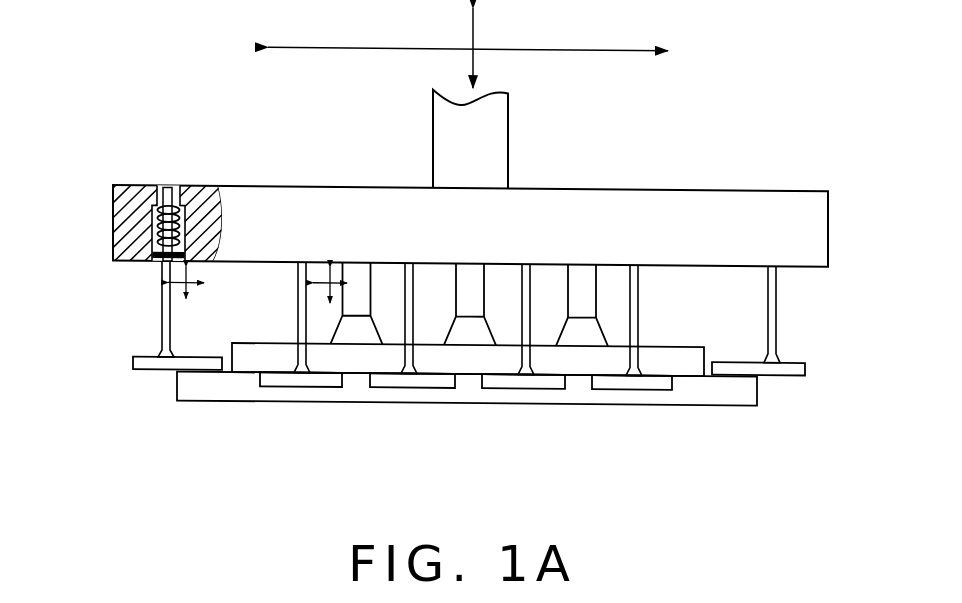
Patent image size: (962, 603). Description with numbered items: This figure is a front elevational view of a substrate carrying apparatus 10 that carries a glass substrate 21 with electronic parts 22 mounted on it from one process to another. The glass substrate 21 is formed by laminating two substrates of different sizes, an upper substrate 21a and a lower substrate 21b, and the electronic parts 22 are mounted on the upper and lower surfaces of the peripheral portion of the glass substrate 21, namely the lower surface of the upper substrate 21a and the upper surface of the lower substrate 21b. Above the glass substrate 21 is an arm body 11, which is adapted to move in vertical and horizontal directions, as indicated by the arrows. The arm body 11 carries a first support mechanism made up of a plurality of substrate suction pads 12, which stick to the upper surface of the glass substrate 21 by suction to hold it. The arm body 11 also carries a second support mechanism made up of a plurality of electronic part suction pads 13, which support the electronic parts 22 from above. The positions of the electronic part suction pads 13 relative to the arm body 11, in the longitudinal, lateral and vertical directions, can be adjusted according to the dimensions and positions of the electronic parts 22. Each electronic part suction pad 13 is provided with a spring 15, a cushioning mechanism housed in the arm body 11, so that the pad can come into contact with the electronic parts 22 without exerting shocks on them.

The substrate carrying apparatus 10 is at (680, 151).
The arm body 11 is at (594, 200).
The substrate suction pad 12 is at (370, 292).
The electronic part suction pad 13 is at (158, 302).
The spring 15 is at (150, 224).
The glass substrate 21 is at (506, 424).
The upper substrate 21a is at (701, 376).
The lower substrate 21b is at (672, 401).
The electronic part 22 is at (150, 370).